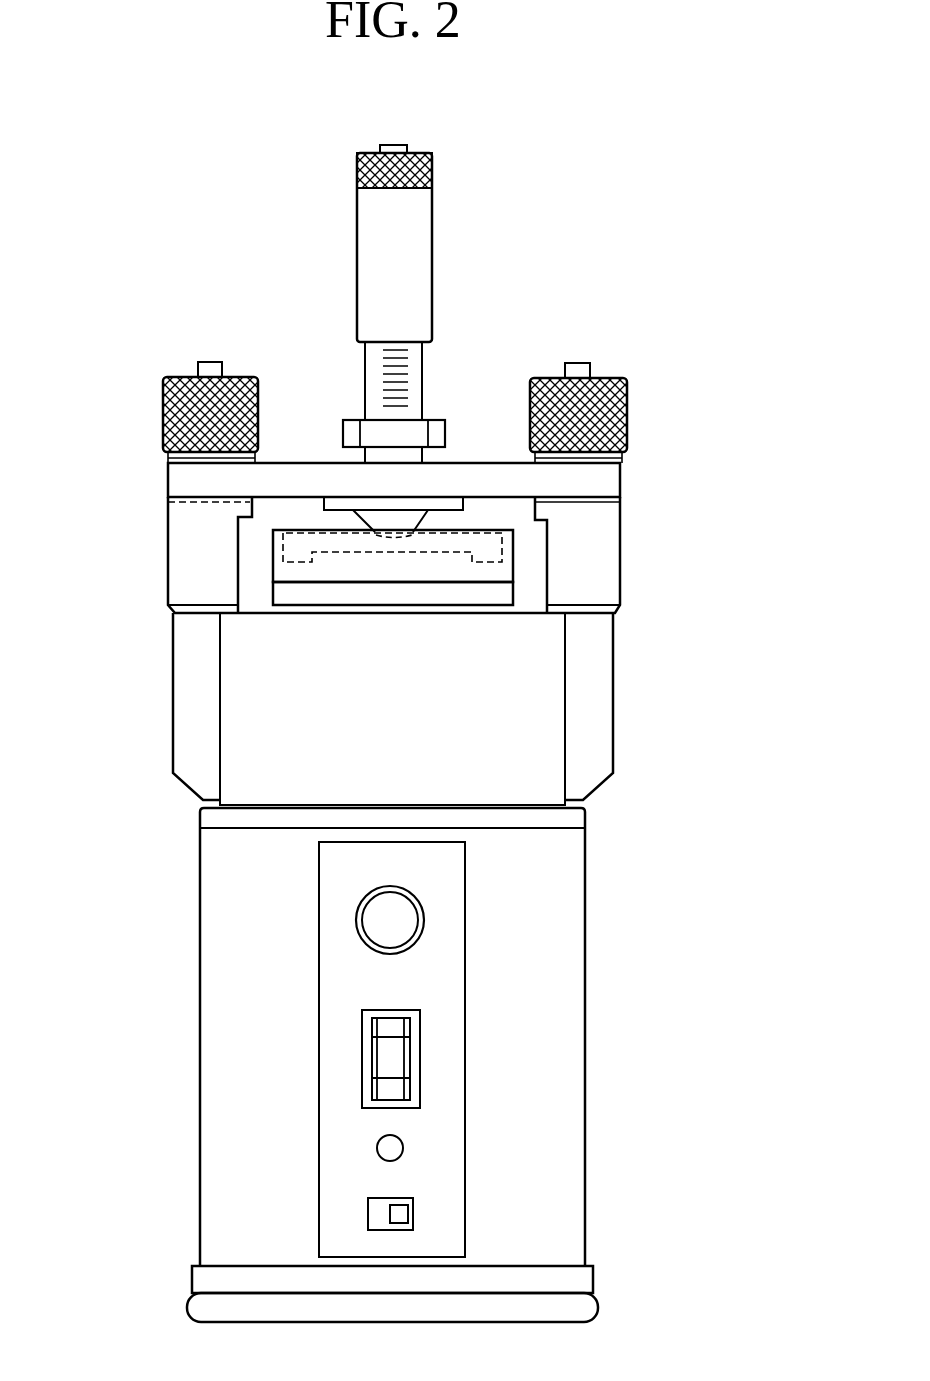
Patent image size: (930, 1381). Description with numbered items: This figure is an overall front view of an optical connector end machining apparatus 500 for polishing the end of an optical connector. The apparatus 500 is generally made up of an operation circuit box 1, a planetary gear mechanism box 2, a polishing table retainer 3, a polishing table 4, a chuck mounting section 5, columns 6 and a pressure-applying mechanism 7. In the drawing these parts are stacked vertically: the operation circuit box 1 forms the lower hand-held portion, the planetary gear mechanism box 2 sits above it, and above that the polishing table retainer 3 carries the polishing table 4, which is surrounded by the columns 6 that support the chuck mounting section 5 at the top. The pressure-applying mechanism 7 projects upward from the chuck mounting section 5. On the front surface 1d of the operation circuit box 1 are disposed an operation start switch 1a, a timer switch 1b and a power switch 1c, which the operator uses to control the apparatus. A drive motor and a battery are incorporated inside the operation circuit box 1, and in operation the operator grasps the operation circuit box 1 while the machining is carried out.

The optical connector end machining apparatus 500 is at (612, 160).
The pressure-applying mechanism 7 is at (447, 266).
The columns 6 is at (182, 552).
The chuck mounting section 5 is at (610, 485).
The polishing table 4 is at (507, 572).
The polishing table retainer 3 is at (507, 593).
The planetary gear mechanism box 2 is at (540, 730).
The operation circuit box 1 is at (560, 982).
The operation start switch 1a is at (403, 927).
The timer switch 1b is at (413, 1070).
The front surface 1d is at (442, 1143).
The power switch 1c is at (400, 1230).